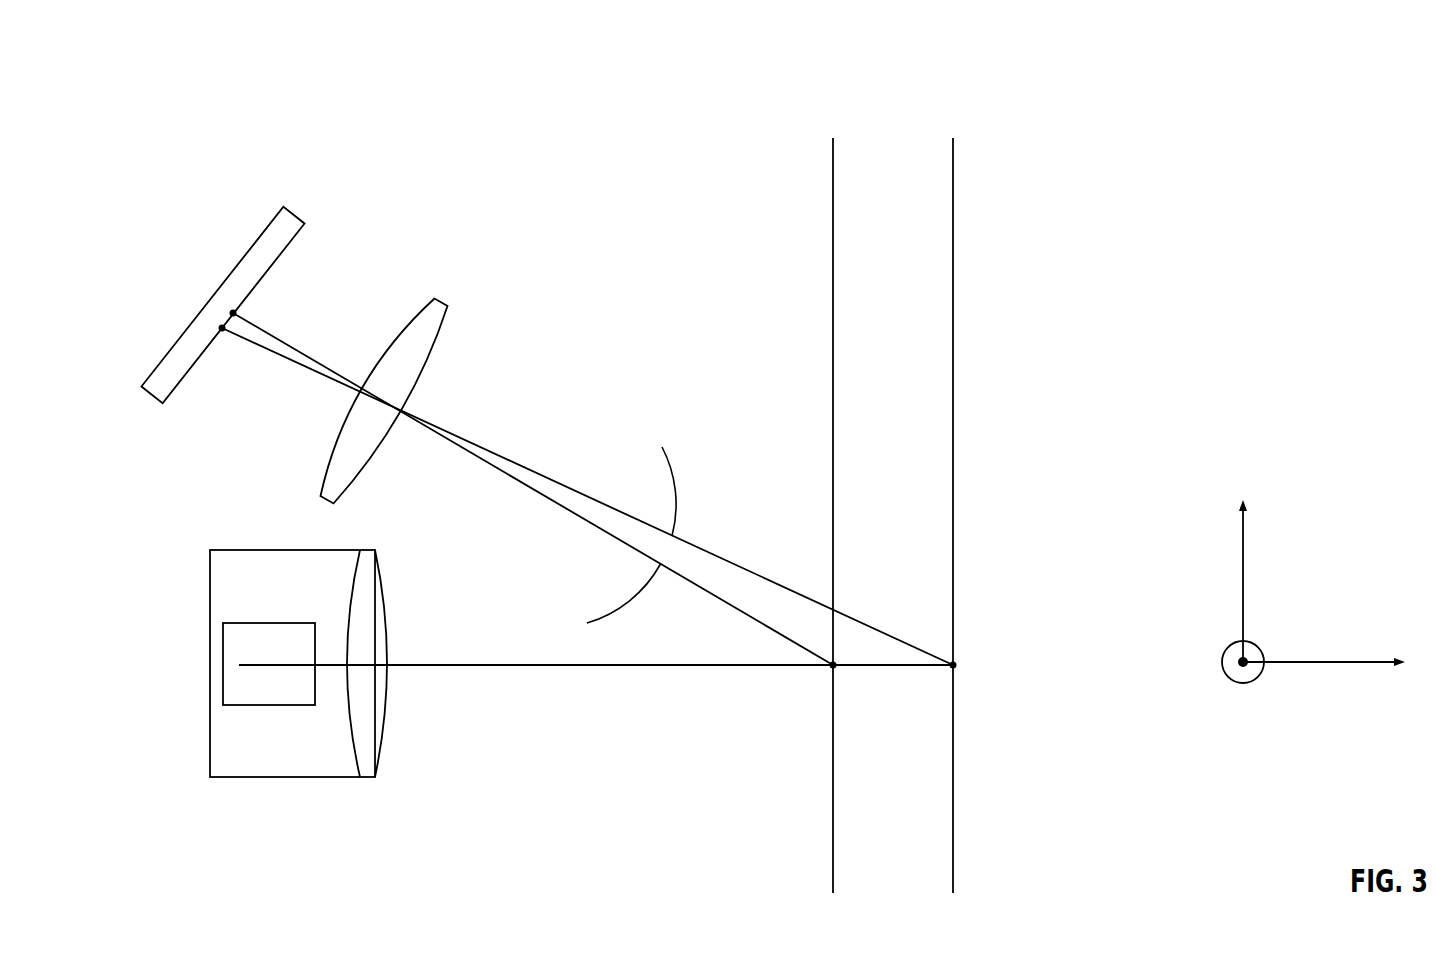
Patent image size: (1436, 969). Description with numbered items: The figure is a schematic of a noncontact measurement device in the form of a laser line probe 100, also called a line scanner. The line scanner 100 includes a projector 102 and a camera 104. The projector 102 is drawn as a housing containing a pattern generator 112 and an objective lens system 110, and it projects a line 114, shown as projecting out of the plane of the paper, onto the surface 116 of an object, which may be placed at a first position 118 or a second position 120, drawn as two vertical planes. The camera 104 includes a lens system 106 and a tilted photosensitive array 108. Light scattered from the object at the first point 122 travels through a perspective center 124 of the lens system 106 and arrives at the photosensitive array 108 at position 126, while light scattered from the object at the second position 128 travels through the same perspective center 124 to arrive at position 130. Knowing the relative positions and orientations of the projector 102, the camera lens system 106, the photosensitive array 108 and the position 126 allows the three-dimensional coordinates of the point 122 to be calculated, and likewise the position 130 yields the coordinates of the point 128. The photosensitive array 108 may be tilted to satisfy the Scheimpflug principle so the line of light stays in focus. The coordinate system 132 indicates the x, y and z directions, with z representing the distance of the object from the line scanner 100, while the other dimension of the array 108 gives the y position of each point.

The laser line probe 100 is at (141, 86).
The projector 102 is at (248, 820).
The camera 104 is at (413, 182).
The lens system 106 is at (437, 297).
The photosensitive array 108 is at (297, 217).
The objective lens system 110 is at (378, 757).
The pattern generator 112 is at (270, 623).
The line 114 is at (636, 668).
The surface 116 is at (945, 95).
The first position 118 is at (835, 177).
The second position 120 is at (955, 177).
The first point 122 is at (832, 669).
The perspective center 124 is at (383, 400).
The position on photosensitive array 126 is at (231, 311).
The second position point 128 is at (955, 669).
The position on photosensitive array 130 is at (220, 326).
The coordinate system 132 is at (1364, 426).